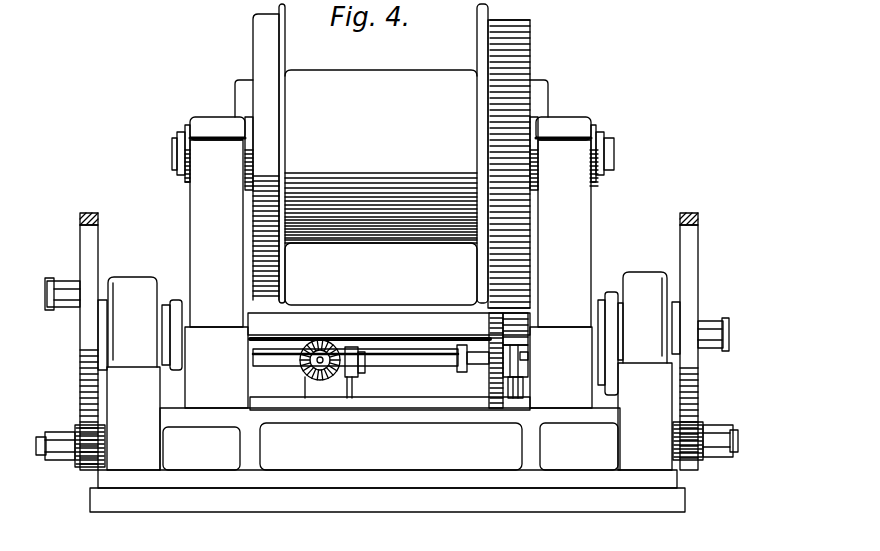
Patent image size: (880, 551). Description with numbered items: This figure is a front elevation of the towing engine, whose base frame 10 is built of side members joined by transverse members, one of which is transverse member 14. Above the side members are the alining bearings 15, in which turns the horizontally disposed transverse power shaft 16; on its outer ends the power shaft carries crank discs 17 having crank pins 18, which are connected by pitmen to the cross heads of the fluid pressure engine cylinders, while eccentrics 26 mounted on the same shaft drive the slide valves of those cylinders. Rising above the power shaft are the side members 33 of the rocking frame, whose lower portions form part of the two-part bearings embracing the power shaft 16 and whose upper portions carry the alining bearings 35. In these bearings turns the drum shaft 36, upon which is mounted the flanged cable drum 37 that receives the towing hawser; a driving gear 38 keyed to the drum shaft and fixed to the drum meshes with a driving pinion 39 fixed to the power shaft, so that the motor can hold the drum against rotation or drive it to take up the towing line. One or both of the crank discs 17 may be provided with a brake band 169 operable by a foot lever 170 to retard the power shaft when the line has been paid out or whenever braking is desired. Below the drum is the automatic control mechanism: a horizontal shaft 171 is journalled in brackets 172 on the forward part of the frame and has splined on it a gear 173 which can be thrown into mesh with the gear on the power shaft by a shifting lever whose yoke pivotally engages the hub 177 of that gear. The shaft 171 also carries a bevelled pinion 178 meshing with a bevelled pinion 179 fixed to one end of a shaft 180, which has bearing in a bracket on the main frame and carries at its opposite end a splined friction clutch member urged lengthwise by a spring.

The base frame 10 is at (336, 500).
The transverse member 14 is at (447, 486).
The alining bearings 15 is at (128, 278).
The power shaft 16 is at (407, 320).
The crank discs 17 is at (80, 245).
The crank pins 18 is at (47, 297).
The eccentrics 26 is at (177, 298).
The side members 33 is at (197, 207).
The alining bearings 35 is at (204, 120).
The drum shaft 36 is at (614, 157).
The flanged cable drum 37 is at (436, 69).
The driving gear 38 is at (531, 53).
The driving pinion 39 is at (531, 302).
The brake band 169 is at (92, 213).
The foot lever 170 is at (52, 430).
The horizontal shaft 171 is at (401, 366).
The brackets 172 is at (352, 379).
The gear 173 is at (498, 410).
The hub 177 is at (476, 373).
The bevelled pinion 178 is at (334, 379).
The bevelled pinion 179 is at (301, 381).
The shaft 180 is at (322, 357).